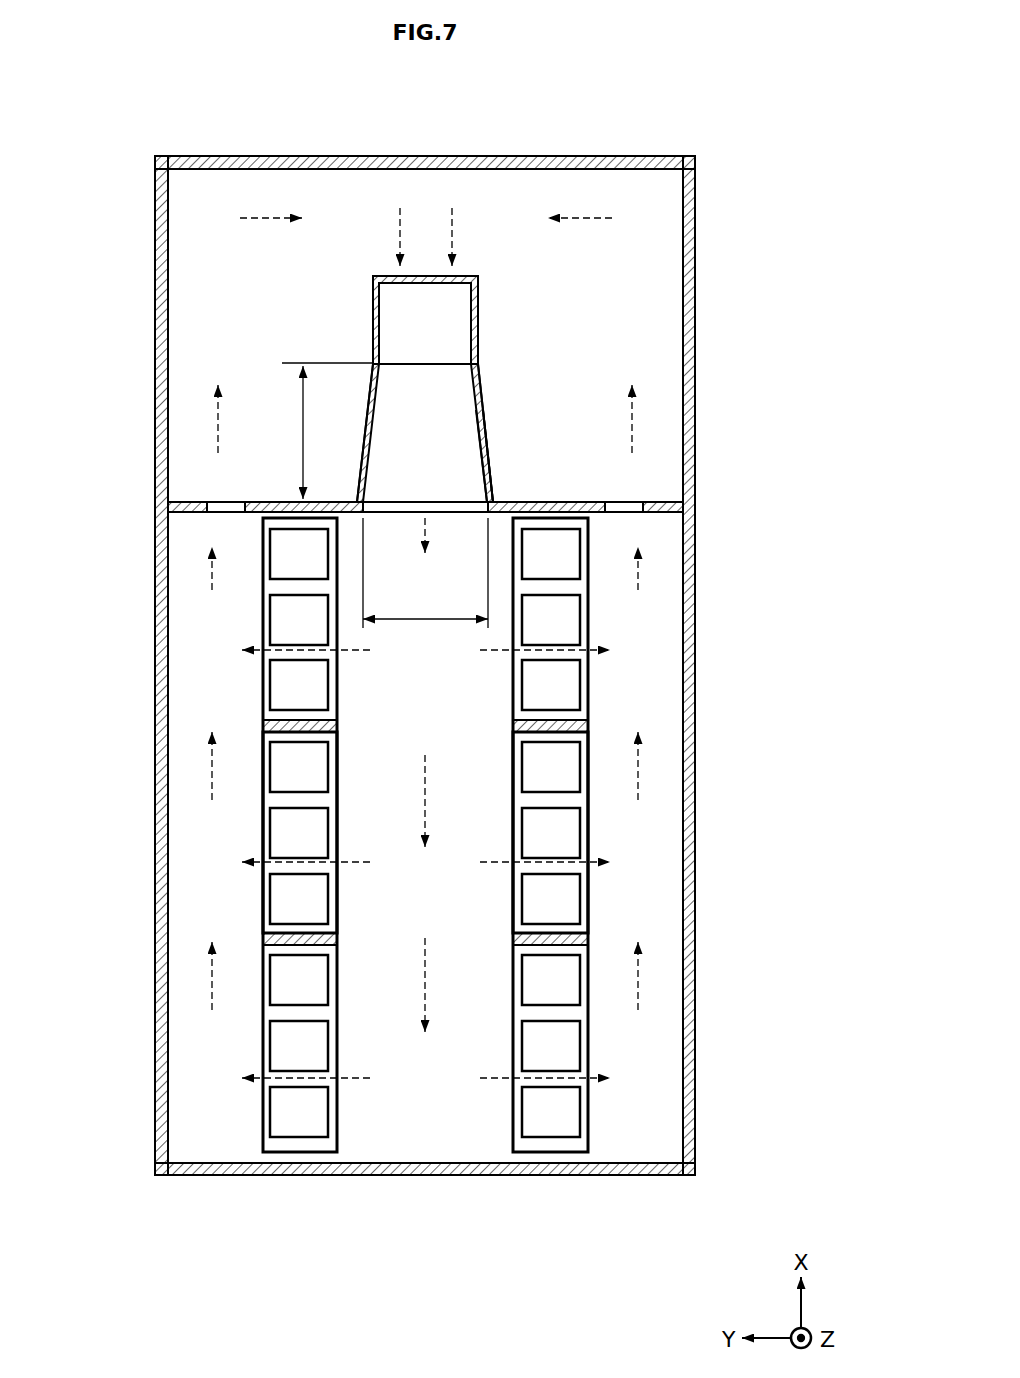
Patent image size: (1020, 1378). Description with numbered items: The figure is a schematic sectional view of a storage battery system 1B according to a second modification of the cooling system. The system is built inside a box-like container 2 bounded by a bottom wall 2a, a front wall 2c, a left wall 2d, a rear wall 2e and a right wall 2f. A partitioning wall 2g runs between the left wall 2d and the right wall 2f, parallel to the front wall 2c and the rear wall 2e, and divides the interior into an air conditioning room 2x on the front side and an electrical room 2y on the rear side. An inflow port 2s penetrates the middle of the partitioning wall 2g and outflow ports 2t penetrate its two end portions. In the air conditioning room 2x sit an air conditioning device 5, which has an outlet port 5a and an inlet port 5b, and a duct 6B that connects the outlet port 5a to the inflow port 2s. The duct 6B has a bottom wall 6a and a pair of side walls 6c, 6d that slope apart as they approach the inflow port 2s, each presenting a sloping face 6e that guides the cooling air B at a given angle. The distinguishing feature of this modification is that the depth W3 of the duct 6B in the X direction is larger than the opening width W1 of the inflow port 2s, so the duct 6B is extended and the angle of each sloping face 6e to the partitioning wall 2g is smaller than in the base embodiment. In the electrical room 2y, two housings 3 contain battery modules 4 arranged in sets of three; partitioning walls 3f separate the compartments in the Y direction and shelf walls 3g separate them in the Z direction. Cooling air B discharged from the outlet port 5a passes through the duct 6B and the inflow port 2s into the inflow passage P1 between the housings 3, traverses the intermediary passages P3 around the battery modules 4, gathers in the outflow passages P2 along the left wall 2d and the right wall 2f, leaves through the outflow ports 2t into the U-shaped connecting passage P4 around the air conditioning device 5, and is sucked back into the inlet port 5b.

The storage battery system 1B is at (108, 140).
The container 2 is at (650, 157).
The bottom wall 2a is at (380, 1148).
The front wall 2c is at (243, 158).
The left wall 2d is at (158, 556).
The rear wall 2e is at (248, 1177).
The right wall 2f is at (695, 534).
The partitioning wall 2g is at (262, 498).
The inflow port 2s is at (452, 513).
The outflow ports 2t is at (205, 514).
The air conditioning room 2x is at (183, 348).
The electrical room 2y is at (470, 1148).
The housing 3 is at (260, 1027).
The partitioning walls 3f is at (578, 717).
The shelf walls 3g is at (273, 798).
The battery module 4 is at (278, 623).
The air conditioning device 5 is at (472, 270).
The outlet port 5a is at (422, 366).
The inlet port 5b is at (425, 276).
The duct 6B is at (487, 412).
The bottom wall 6a is at (487, 433).
The side wall 6c is at (368, 405).
The side wall 6d is at (487, 470).
The sloping face 6e is at (378, 362).
The cooling air B is at (426, 516).
The inflow passage P1 is at (372, 910).
The outflow passages P2 is at (188, 722).
The intermediary passages P3 is at (572, 1018).
The connecting passage P4 is at (212, 250).
The opening width W1 is at (422, 622).
The depth W3 is at (303, 432).